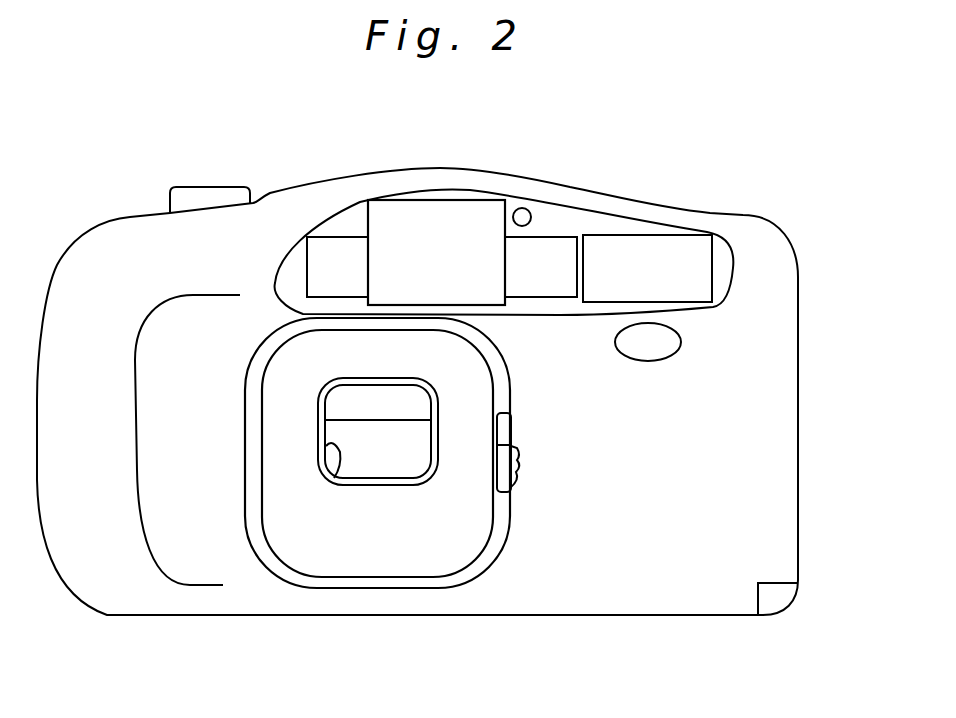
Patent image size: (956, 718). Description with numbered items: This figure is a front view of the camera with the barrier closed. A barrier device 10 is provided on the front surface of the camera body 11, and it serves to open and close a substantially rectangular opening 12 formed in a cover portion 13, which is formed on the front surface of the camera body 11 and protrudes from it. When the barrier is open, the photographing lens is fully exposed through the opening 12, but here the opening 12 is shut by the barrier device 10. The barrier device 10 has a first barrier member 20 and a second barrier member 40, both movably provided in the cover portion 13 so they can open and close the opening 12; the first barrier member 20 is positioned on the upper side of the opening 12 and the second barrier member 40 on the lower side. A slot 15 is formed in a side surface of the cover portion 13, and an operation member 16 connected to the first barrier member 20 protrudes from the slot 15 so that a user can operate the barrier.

The barrier device 10 is at (503, 529).
The camera body 11 is at (705, 590).
The opening 12 is at (337, 467).
The cover portion 13 is at (452, 548).
The slot 15 is at (511, 433).
The operation member 16 is at (519, 470).
The first barrier member 20 is at (368, 392).
The second barrier member 40 is at (408, 465).